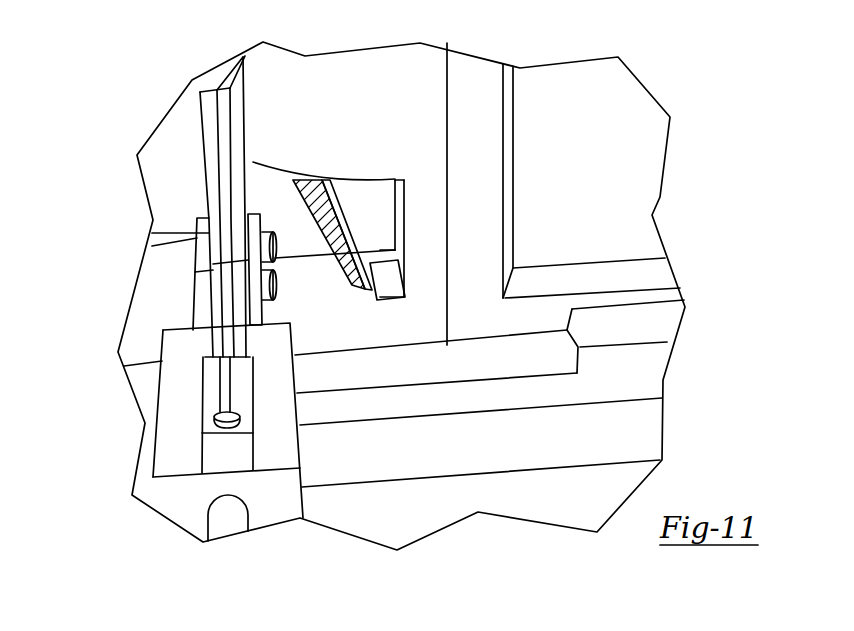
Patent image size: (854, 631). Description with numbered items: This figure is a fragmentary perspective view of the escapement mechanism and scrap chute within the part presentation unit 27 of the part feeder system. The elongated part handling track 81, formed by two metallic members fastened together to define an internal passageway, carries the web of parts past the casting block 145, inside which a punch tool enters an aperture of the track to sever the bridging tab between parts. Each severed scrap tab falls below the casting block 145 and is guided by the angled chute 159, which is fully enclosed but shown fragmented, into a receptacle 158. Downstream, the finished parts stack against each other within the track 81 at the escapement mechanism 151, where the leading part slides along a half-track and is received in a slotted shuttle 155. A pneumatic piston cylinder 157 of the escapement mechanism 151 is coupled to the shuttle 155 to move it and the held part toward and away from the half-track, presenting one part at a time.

The part presentation unit 27 is at (620, 88).
The part handling track 81 is at (216, 129).
The casting block 145 is at (332, 123).
The escapement mechanism 151 is at (200, 233).
The slotted shuttle 155 is at (213, 455).
The pneumatic piston cylinder 157 is at (228, 522).
The receptacle 158 is at (383, 278).
The angled chute 159 is at (330, 225).